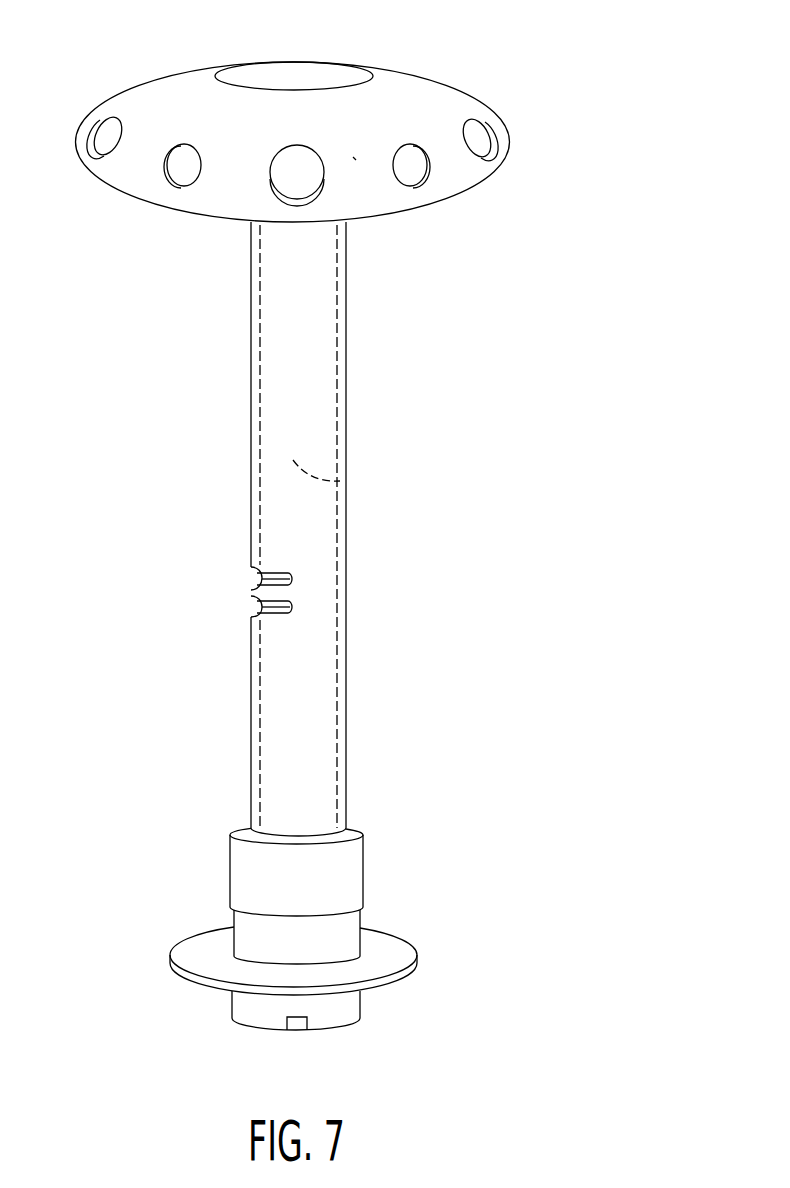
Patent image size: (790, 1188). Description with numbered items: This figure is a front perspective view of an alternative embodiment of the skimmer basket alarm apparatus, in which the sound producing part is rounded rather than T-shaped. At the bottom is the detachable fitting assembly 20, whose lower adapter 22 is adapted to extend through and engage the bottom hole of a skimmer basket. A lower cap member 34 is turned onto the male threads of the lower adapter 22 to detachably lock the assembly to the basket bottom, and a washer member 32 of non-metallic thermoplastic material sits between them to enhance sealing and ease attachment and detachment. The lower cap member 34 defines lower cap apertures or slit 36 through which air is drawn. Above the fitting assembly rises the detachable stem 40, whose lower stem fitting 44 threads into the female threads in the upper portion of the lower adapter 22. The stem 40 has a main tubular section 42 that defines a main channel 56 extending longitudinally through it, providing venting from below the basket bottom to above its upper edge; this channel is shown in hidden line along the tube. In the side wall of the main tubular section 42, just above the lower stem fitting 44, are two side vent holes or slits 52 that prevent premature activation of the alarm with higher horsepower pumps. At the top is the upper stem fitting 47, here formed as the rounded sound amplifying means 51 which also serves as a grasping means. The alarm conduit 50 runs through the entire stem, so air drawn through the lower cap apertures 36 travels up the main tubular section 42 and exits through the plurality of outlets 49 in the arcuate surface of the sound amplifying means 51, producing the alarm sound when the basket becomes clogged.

The detachable fitting assembly 20 is at (322, 950).
The lower adapter 22 is at (312, 952).
The washer member 32 is at (399, 970).
The lower cap member 34 is at (238, 1008).
The lower cap apertures 36 is at (293, 1030).
The detachable stem 40 is at (311, 404).
The main tubular section 42 is at (310, 710).
The lower stem fitting 44 is at (314, 900).
The upper stem fitting 47 is at (377, 128).
The outlets 49 is at (287, 178).
The alarm conduit 50 is at (223, 62).
The sound amplifying means 51 is at (353, 157).
The side vent holes or slits 52 is at (252, 615).
The main channel 56 is at (340, 481).